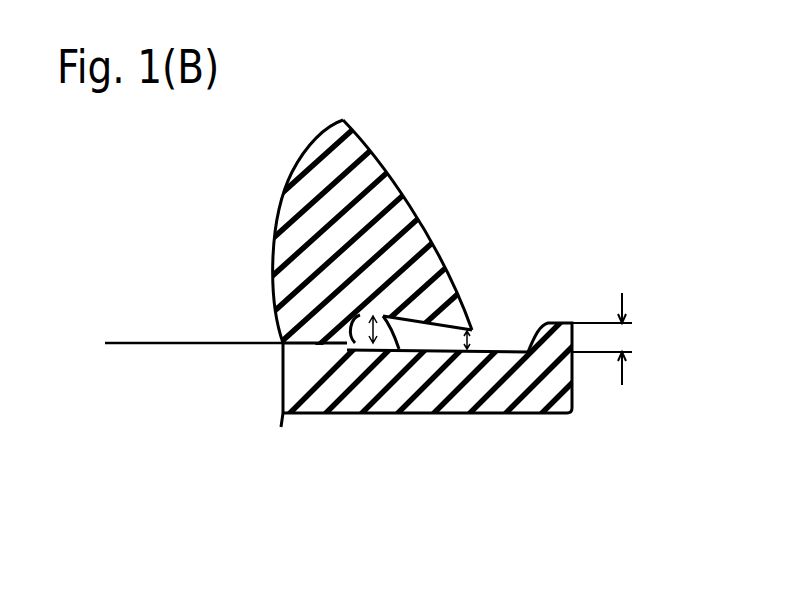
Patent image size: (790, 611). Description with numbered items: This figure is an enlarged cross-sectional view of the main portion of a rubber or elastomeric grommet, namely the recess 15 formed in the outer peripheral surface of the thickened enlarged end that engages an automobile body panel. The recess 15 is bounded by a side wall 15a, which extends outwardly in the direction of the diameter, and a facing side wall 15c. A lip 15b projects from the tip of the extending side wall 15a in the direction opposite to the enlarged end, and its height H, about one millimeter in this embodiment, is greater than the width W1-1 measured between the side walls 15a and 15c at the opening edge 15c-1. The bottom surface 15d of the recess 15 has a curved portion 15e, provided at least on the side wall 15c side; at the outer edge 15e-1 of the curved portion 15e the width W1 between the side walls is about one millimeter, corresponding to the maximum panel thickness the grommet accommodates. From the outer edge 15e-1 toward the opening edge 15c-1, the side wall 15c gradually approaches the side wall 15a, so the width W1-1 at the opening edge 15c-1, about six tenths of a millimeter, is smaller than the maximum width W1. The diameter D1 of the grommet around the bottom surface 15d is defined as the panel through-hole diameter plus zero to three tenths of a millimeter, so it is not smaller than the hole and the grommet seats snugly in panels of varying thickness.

The recess 15 is at (350, 365).
The side wall 15a is at (440, 375).
The lip 15b is at (572, 387).
The side wall 15c is at (420, 268).
The opening edge 15c-1 is at (478, 318).
The bottom surface 15d is at (345, 346).
The curved portion 15e is at (330, 310).
The outer edge 15e-1 is at (420, 297).
The diameter D1 is at (194, 324).
The height H is at (617, 339).
The width W1 is at (397, 356).
The width W1-1 is at (518, 353).